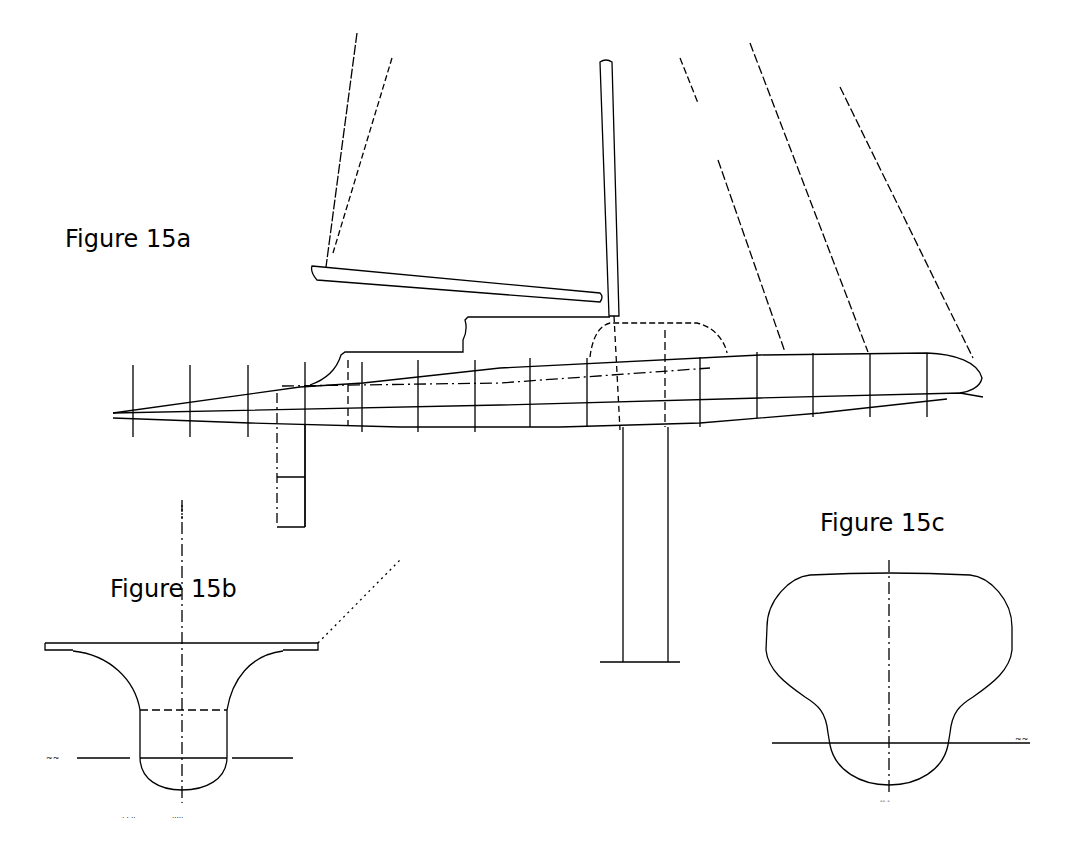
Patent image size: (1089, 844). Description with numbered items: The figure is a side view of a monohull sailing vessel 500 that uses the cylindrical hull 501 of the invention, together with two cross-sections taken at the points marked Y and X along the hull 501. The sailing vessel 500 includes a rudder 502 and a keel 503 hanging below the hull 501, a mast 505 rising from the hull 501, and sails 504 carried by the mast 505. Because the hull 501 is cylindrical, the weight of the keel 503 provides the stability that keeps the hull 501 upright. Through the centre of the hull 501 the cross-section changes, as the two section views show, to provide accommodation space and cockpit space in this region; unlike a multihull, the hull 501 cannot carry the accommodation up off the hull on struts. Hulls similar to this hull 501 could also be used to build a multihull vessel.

The sailing vessel 500 is at (903, 97).
The hull 501 is at (983, 363).
The rudder 502 is at (313, 493).
The keel 503 is at (610, 537).
The sails 504 is at (488, 136).
The mast 505 is at (620, 200).